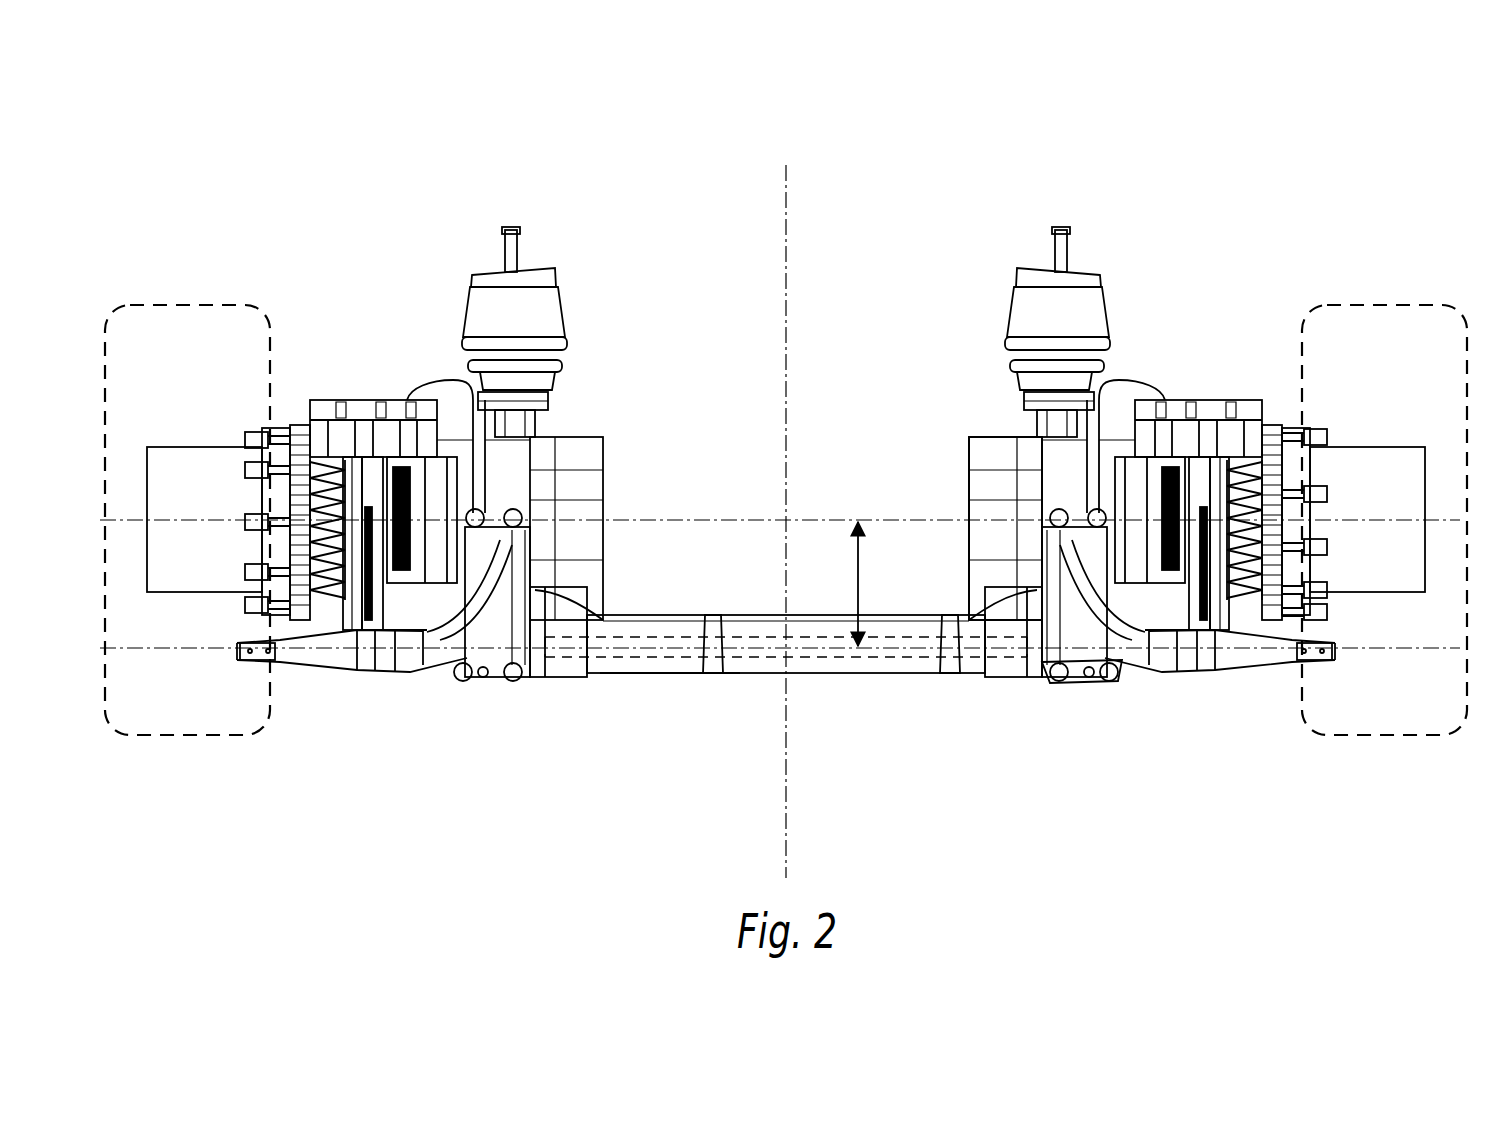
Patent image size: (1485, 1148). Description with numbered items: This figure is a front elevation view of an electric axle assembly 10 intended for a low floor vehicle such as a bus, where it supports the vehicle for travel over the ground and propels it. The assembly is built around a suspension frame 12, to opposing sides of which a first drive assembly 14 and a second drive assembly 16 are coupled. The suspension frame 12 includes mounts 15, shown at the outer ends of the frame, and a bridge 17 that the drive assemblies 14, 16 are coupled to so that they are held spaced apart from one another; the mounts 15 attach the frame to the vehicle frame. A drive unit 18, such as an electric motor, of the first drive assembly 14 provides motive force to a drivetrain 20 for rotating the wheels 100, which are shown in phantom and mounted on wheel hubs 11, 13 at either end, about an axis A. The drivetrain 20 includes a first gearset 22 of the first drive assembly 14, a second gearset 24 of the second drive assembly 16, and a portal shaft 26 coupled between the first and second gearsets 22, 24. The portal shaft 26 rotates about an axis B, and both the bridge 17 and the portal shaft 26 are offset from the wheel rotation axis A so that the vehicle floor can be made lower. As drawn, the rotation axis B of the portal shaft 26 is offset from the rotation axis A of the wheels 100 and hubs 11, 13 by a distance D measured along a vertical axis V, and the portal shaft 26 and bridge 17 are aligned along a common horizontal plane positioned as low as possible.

The electric axle assembly 10 is at (783, 478).
The wheels 100 is at (201, 290).
The wheel hub 11 is at (1341, 423).
The wheel hub 13 is at (218, 426).
The suspension frame 12 is at (777, 761).
The first drive assembly 14 is at (985, 420).
The second drive assembly 16 is at (585, 428).
The mounts 15 is at (347, 672).
The bridge 17 is at (664, 682).
The drive unit 18 is at (970, 487).
The drivetrain 20 is at (1188, 739).
The first gearset 22 is at (1035, 672).
The second gearset 24 is at (547, 680).
The portal shaft 26 is at (884, 664).
The axis A is at (640, 517).
The axis B is at (626, 645).
The distance D is at (858, 578).
The vertical axis V is at (790, 218).